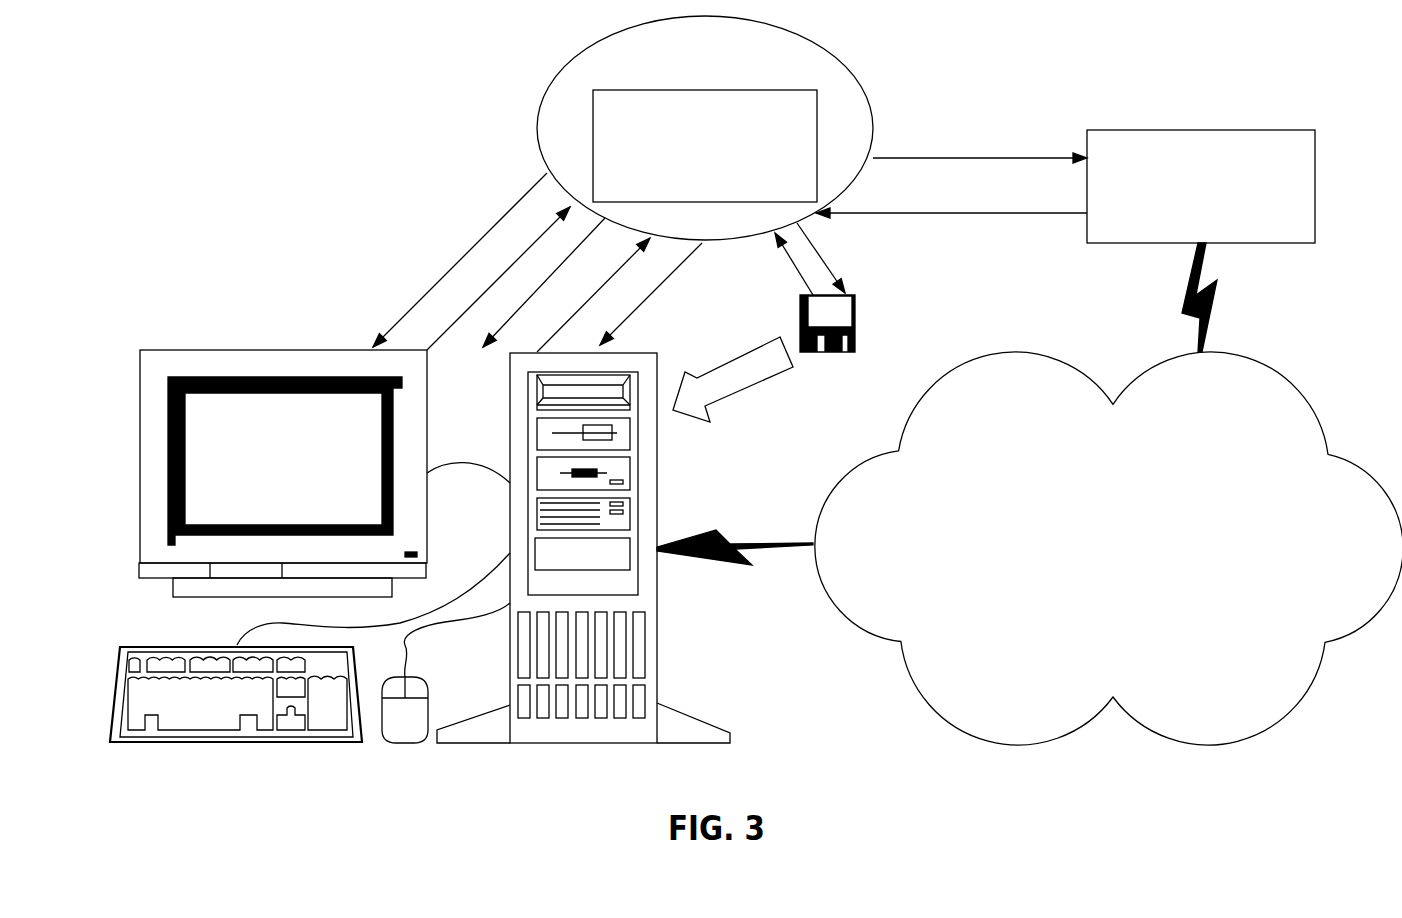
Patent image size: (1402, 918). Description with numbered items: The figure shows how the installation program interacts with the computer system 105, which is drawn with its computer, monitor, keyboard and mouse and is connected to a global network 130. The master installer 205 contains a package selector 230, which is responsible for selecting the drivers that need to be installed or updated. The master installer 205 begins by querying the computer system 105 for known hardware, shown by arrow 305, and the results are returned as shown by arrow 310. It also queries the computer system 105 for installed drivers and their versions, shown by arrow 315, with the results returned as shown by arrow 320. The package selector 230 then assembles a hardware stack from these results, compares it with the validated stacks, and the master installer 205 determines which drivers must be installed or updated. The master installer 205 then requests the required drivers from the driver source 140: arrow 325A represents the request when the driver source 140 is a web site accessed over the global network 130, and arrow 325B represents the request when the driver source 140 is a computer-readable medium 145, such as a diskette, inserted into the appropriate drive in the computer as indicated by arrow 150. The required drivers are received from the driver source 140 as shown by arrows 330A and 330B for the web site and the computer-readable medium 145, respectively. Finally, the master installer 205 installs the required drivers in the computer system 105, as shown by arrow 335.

The computer system 105 is at (165, 262).
The global network 130 is at (1023, 353).
The driver source 140 is at (1131, 131).
The computer-readable medium 145 is at (800, 327).
The arrow 150 is at (747, 356).
The master installer 205 is at (563, 56).
The package selector 230 is at (593, 145).
The arrow 305 is at (611, 333).
The arrow 310 is at (568, 318).
The arrow 315 is at (525, 303).
The arrow 320 is at (485, 291).
The arrow 335 is at (443, 277).
The arrow 325A is at (984, 158).
The arrow 325B is at (810, 242).
The arrow 330A is at (984, 213).
The arrow 330B is at (800, 270).